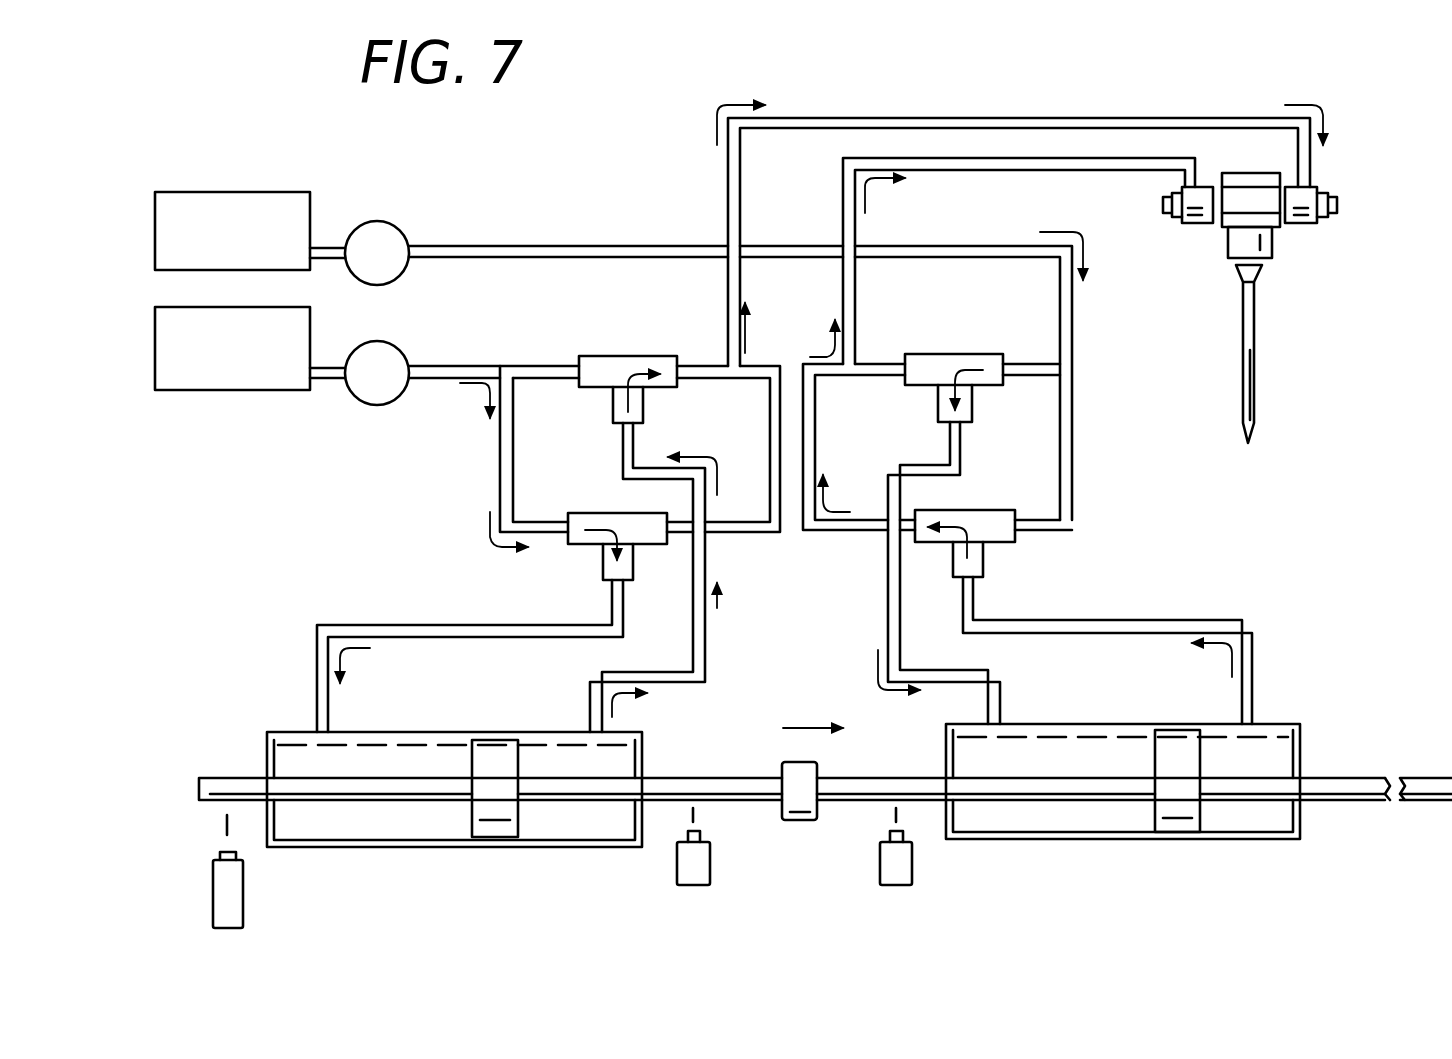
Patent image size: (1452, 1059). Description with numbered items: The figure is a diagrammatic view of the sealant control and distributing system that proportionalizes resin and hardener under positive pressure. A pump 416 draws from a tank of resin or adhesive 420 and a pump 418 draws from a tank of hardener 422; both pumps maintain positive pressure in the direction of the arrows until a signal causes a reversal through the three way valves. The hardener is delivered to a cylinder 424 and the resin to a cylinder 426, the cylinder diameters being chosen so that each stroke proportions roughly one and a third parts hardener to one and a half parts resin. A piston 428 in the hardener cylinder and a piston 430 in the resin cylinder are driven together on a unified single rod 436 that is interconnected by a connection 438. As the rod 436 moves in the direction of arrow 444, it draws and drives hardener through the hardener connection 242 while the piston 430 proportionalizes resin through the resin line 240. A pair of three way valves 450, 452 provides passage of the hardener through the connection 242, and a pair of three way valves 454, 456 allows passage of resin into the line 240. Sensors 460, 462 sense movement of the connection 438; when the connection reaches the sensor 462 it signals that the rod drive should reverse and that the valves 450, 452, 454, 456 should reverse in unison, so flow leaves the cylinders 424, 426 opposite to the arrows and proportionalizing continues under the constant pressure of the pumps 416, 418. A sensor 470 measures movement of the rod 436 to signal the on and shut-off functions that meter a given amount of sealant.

The tank of resin or adhesive 420 is at (310, 203).
The tank of hardener 422 is at (294, 377).
The pump 416 is at (407, 236).
The pump 418 is at (405, 358).
The three way valve 450 is at (607, 357).
The three way valve 452 is at (613, 513).
The three way valve 454 is at (943, 355).
The three way valve 456 is at (980, 510).
The cylinder 424 is at (454, 796).
The piston 428 is at (505, 827).
The cylinder 426 is at (1126, 810).
The piston 430 is at (1180, 823).
The rod 436 is at (724, 775).
The connection 438 is at (820, 823).
The arrow 444 is at (795, 720).
The sensor 460 is at (690, 868).
The sensor 462 is at (905, 865).
The sensor 470 is at (243, 883).
The resin line 240 is at (1155, 163).
The hardener connection 242 is at (1313, 172).